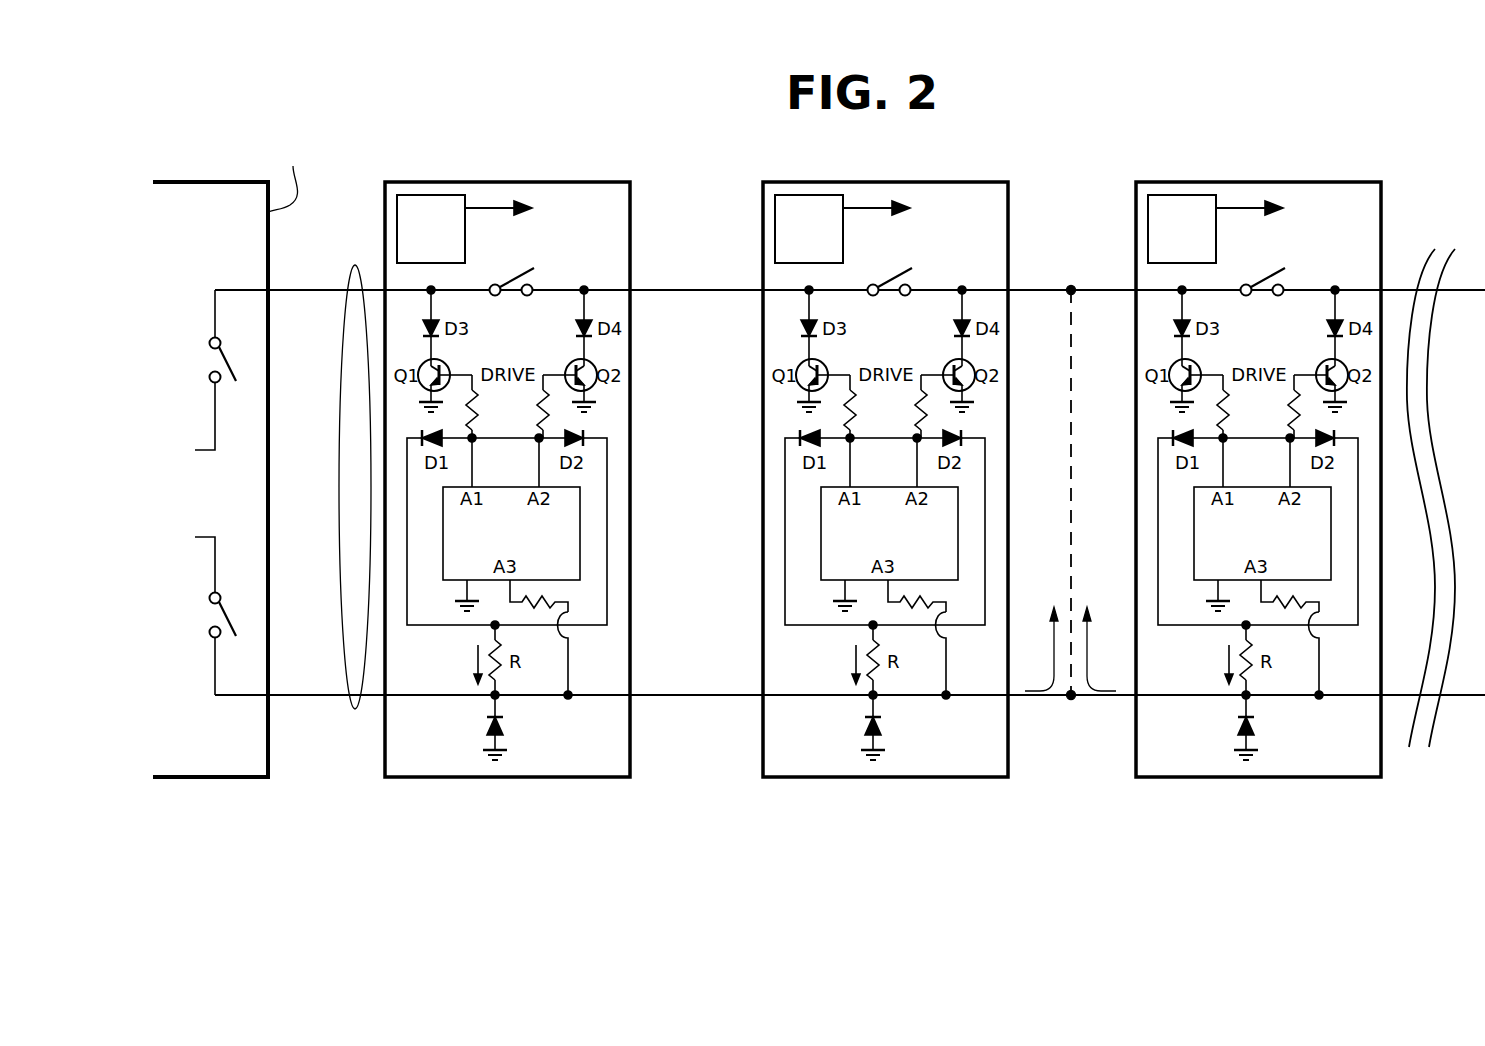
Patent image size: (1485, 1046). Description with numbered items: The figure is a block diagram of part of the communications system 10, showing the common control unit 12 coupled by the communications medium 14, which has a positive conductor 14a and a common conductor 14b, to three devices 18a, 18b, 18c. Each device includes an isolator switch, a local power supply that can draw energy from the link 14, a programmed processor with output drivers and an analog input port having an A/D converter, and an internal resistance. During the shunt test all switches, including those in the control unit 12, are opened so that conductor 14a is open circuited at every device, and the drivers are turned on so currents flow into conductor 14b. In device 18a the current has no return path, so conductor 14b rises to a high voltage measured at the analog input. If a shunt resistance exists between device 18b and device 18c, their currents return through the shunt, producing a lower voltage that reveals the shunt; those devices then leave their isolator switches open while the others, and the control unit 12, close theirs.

The multi-processor communications system 10 is at (1067, 818).
The common control unit 12 is at (226, 250).
The communications medium 14 is at (355, 268).
The conductor 14a is at (312, 291).
The conductor 14b is at (325, 693).
The device 18a is at (600, 777).
The device 18b is at (978, 777).
The device 18c is at (1352, 777).